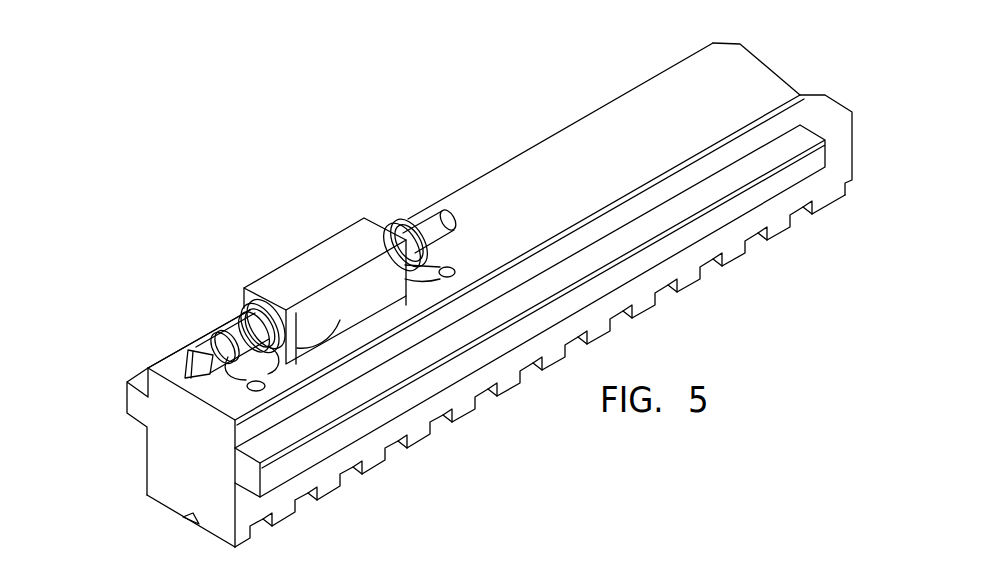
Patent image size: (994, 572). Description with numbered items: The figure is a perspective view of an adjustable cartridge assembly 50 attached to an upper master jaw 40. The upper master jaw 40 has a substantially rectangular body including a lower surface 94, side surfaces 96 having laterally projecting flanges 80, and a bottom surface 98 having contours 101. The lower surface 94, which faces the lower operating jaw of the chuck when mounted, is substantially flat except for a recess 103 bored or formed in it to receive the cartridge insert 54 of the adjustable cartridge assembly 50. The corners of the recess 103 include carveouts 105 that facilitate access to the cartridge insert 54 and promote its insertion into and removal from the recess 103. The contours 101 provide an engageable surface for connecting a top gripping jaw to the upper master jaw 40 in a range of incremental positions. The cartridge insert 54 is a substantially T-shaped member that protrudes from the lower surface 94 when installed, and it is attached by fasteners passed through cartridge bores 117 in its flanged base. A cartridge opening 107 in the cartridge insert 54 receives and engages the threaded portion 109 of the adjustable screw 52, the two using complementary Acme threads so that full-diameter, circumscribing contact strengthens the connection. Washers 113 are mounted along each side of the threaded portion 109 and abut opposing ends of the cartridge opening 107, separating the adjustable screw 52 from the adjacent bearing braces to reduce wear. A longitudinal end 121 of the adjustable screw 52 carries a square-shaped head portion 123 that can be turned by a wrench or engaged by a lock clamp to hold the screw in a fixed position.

The upper master jaw 40 is at (573, 145).
The adjustable cartridge assembly 50 is at (337, 207).
The adjustable screw 52 is at (227, 330).
The cartridge insert 54 is at (308, 262).
The laterally projecting flanges 80 is at (127, 412).
The lower surface 94 is at (663, 92).
The side surfaces 96 is at (148, 462).
The bottom surface 98 is at (165, 512).
The contours 101 is at (437, 421).
The recess 103 is at (225, 380).
The carveouts 105 is at (235, 393).
The cartridge opening 107 is at (245, 312).
The threaded portion 109 is at (400, 228).
The washers 113 is at (247, 317).
The cartridge bores 117 is at (406, 278).
The longitudinal end 121 is at (192, 343).
The head portion 123 is at (183, 352).